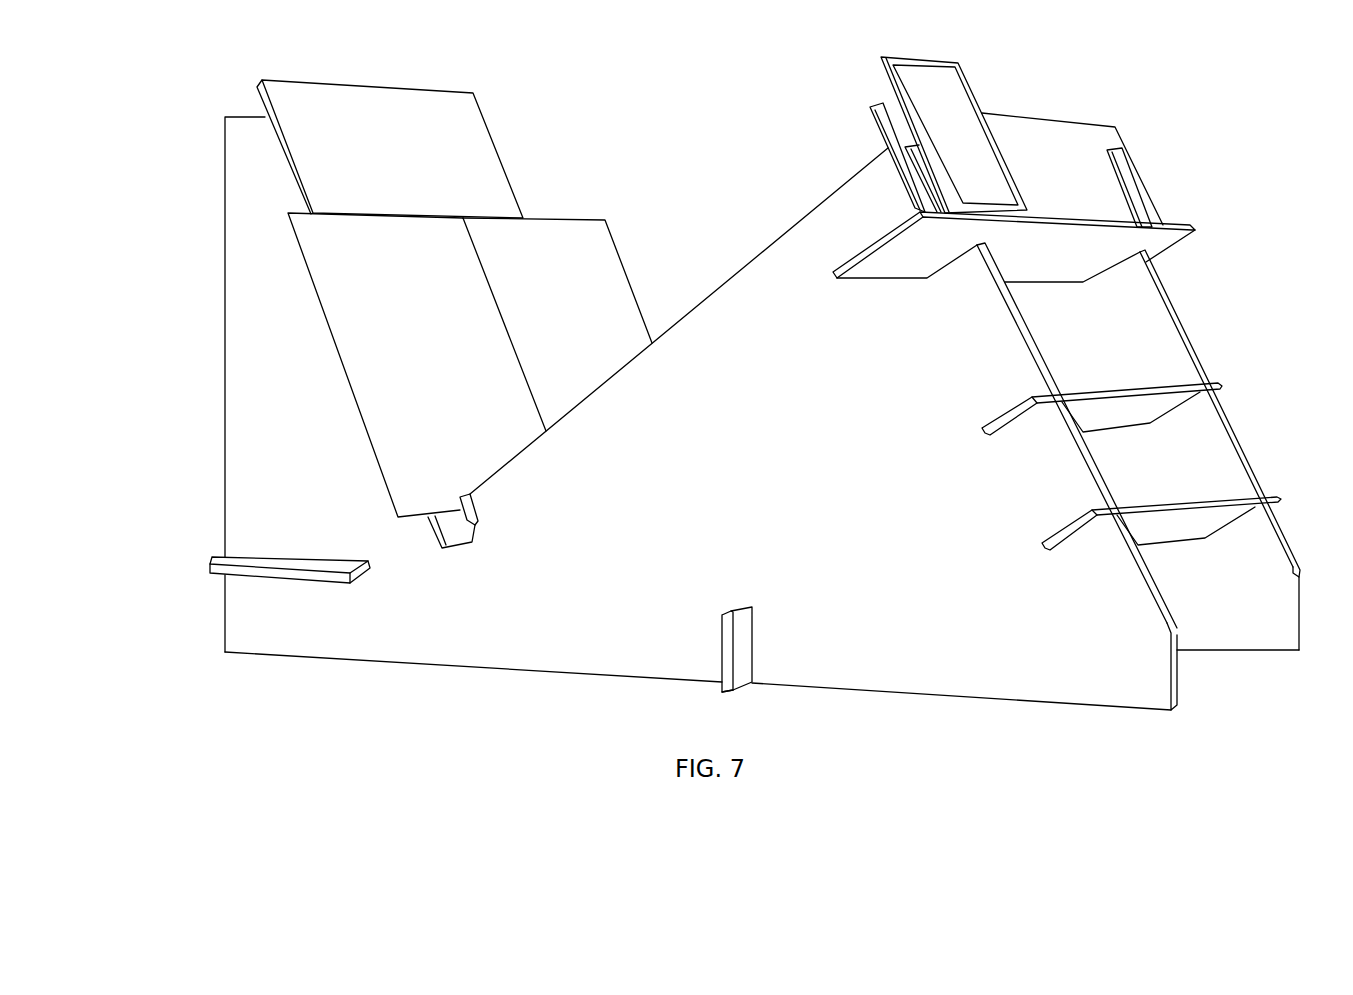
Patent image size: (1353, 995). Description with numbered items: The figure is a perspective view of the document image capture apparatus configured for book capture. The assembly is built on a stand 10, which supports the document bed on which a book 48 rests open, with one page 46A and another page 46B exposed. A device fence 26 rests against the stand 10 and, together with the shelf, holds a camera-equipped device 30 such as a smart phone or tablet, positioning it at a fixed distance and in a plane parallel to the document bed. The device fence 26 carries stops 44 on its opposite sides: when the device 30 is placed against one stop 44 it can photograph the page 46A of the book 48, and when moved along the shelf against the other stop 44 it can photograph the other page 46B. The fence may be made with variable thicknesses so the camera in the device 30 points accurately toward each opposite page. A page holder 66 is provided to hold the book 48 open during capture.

The stand 10 is at (1280, 563).
The device fence 26 is at (1057, 133).
The device 30 is at (950, 82).
The stop 44 is at (930, 172).
The page 46A is at (452, 367).
The page 46B is at (548, 355).
The book 48 is at (466, 298).
The page holder 66 is at (468, 520).